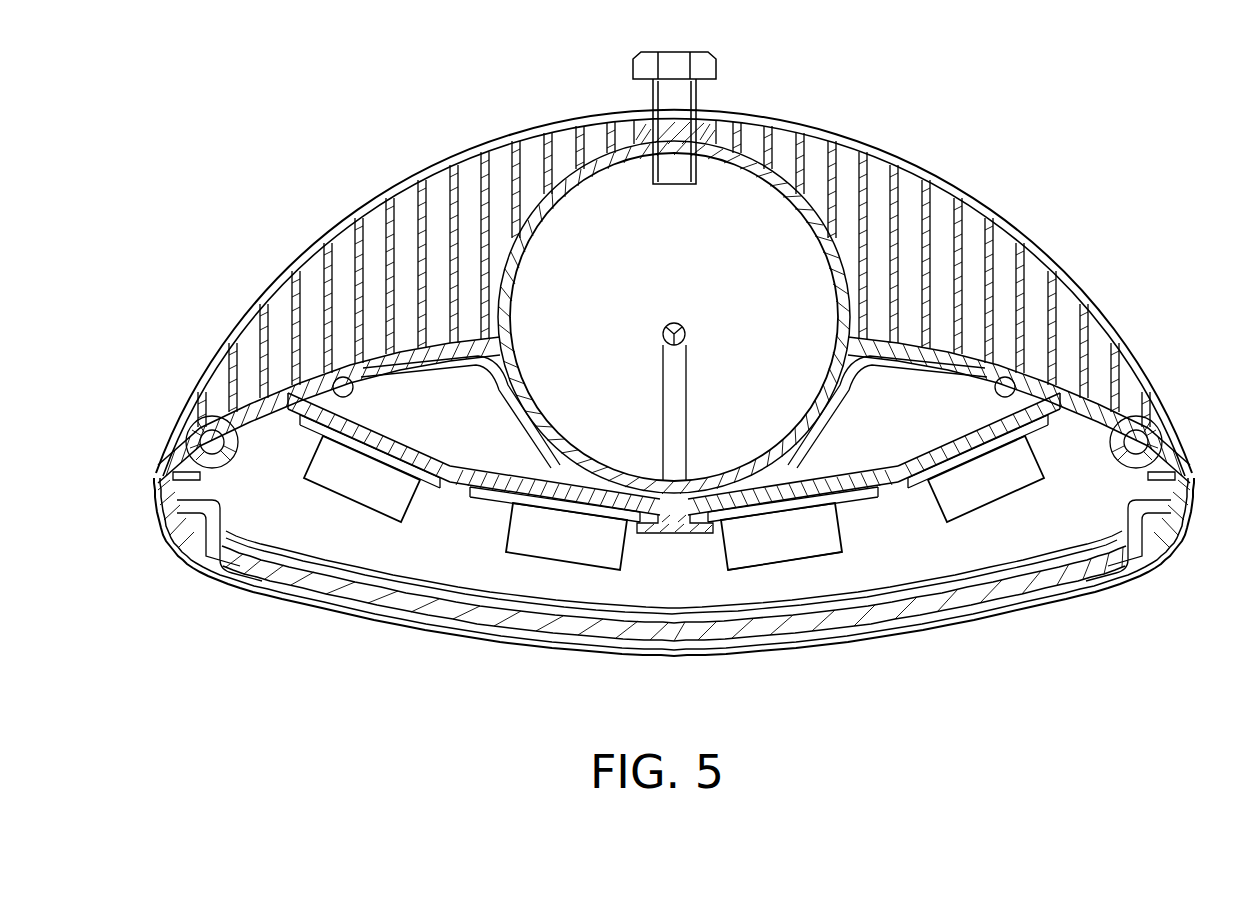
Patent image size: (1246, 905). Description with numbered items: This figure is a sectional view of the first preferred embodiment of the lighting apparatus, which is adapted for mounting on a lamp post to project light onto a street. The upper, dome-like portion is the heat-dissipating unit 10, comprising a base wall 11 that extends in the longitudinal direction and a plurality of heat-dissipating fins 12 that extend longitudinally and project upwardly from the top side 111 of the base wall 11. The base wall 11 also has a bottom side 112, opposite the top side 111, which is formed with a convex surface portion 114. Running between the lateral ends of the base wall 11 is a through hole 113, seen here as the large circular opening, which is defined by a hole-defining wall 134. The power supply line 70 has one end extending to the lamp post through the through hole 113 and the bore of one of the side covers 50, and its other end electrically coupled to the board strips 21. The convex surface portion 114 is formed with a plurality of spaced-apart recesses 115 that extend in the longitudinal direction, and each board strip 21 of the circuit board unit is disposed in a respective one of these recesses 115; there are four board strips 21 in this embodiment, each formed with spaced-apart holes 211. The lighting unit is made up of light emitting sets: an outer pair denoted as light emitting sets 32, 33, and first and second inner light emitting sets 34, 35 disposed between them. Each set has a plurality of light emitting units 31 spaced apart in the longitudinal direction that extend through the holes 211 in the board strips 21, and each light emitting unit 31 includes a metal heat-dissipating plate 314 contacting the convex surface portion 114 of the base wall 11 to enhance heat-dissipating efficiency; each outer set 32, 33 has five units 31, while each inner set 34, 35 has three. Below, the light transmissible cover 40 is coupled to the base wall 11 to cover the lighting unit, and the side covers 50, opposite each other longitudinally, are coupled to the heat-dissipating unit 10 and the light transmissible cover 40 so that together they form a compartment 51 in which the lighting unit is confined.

The heat-dissipating unit 10 is at (1195, 442).
The base wall 11 is at (1178, 397).
The heat-dissipating fins 12 is at (870, 192).
The side covers 50 is at (245, 305).
The through hole 113 is at (765, 205).
The hole-defining wall 134 is at (520, 266).
The power supply line 70 is at (674, 322).
The top side 111 is at (1072, 393).
The recesses 115 is at (1040, 393).
The board strips 21 is at (415, 445).
The holes 211 is at (674, 432).
The metal heat-dissipating plate 314 is at (748, 505).
The convex surface portion 114 is at (533, 505).
The outer light emitting set 32 is at (353, 503).
The first inner light emitting set 34 is at (583, 565).
The light emitting units 31 is at (775, 547).
The second inner light emitting set 35 is at (747, 570).
The outer light emitting set 33 is at (1003, 503).
The bottom side 112 is at (1107, 417).
The light transmissible cover 40 is at (262, 582).
The compartment 51 is at (445, 567).